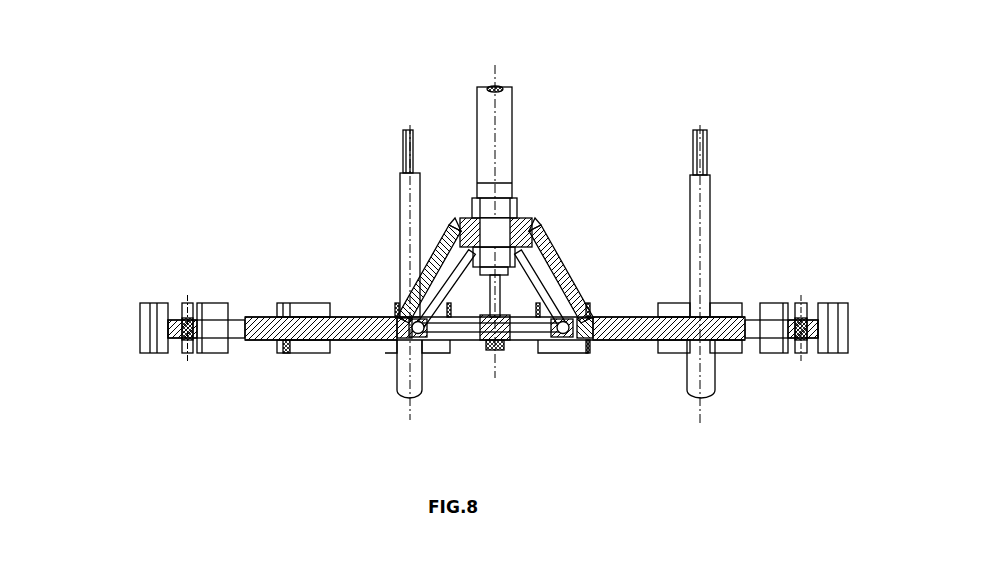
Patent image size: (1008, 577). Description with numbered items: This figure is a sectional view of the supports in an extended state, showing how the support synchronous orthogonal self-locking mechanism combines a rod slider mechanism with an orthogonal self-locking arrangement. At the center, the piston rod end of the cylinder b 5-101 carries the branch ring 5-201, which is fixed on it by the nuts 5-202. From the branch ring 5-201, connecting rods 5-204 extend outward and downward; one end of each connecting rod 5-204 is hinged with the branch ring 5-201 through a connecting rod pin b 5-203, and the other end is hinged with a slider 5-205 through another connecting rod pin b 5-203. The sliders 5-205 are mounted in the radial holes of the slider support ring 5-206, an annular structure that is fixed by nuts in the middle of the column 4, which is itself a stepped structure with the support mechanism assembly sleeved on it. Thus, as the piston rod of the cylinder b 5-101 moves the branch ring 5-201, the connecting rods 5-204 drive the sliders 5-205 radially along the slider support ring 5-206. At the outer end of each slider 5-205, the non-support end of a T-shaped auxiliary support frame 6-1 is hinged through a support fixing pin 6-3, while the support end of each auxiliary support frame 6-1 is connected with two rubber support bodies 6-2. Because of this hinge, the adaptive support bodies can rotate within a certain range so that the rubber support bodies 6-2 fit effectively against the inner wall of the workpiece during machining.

The cylinder b 5-101 is at (572, 201).
The branch ring 5-201 is at (569, 146).
The nuts 5-202 is at (563, 221).
The connecting rod pin b 5-203 is at (532, 252).
The connecting rod 5-204 is at (495, 376).
The slider 5-205 is at (493, 377).
The slider support ring 5-206 is at (560, 370).
The column 4 is at (624, 271).
The auxiliary support frame 6-1 is at (441, 261).
The rubber support body 6-2 is at (426, 282).
The support fixing pin 6-3 is at (421, 345).